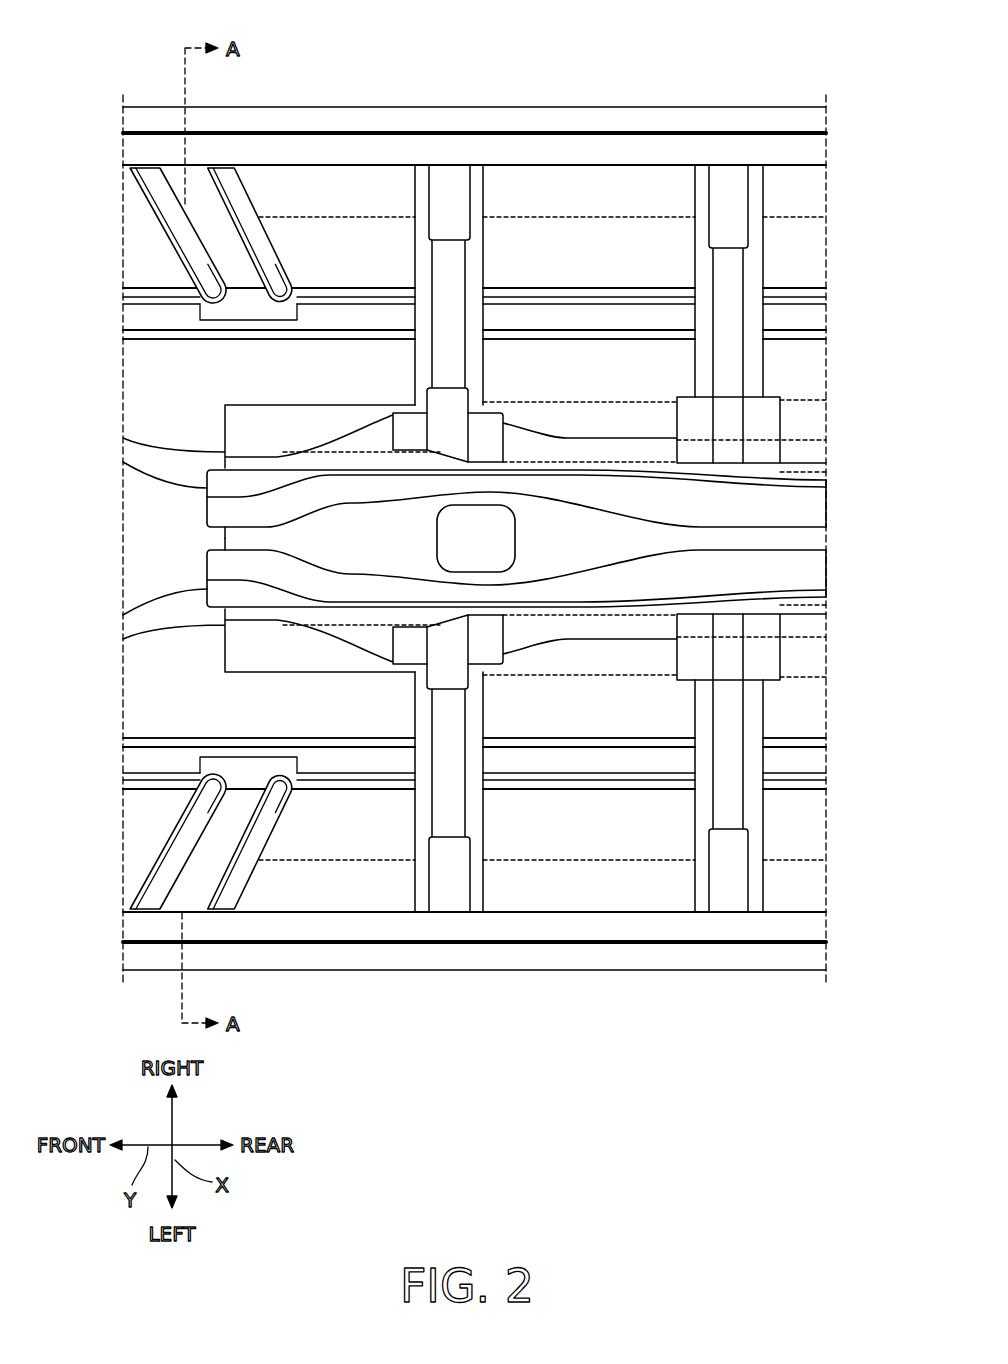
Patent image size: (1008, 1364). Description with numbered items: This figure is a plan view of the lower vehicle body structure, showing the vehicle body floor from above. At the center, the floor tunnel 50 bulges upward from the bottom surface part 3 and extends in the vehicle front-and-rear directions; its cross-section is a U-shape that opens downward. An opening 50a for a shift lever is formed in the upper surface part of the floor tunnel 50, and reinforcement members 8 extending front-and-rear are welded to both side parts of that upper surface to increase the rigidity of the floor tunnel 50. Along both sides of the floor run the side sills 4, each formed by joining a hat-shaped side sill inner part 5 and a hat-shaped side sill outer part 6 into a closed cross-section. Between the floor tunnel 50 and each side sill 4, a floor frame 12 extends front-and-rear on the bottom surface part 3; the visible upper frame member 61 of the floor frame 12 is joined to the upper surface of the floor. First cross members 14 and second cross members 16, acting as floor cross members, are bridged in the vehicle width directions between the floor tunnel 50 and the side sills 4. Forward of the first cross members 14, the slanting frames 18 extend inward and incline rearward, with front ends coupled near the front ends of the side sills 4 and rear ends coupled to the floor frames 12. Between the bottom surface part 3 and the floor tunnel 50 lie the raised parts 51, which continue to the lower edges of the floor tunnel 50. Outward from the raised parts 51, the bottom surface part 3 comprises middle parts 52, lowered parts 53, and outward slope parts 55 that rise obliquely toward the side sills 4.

The bottom surface part 3 is at (612, 382).
The side sill 4 is at (474, 536).
The side sill inner part 5 is at (600, 148).
The side sill outer part 6 is at (638, 115).
The reinforcement member 8 is at (815, 504).
The floor frame 12 is at (338, 290).
The first cross member 14 is at (455, 268).
The second cross member 16 is at (720, 262).
The slanting frame 18 is at (213, 233).
The floor tunnel 50 is at (661, 538).
The opening 50a is at (498, 562).
The raised part 51 is at (815, 449).
The middle part 52 is at (815, 374).
The lowered part 53 is at (815, 259).
The outward slope part 55 is at (815, 194).
The upper frame member 61 is at (375, 308).